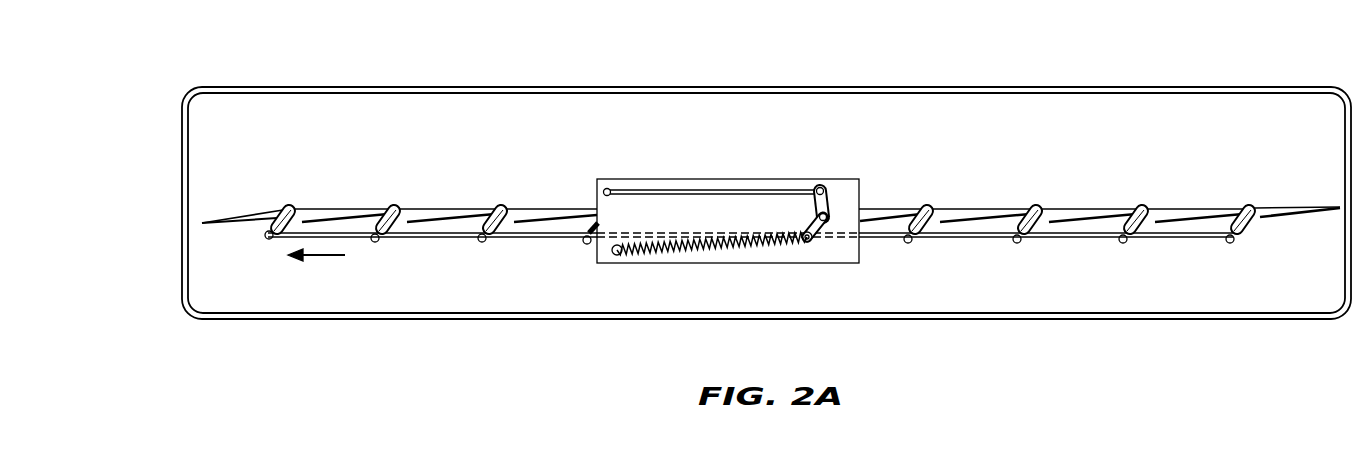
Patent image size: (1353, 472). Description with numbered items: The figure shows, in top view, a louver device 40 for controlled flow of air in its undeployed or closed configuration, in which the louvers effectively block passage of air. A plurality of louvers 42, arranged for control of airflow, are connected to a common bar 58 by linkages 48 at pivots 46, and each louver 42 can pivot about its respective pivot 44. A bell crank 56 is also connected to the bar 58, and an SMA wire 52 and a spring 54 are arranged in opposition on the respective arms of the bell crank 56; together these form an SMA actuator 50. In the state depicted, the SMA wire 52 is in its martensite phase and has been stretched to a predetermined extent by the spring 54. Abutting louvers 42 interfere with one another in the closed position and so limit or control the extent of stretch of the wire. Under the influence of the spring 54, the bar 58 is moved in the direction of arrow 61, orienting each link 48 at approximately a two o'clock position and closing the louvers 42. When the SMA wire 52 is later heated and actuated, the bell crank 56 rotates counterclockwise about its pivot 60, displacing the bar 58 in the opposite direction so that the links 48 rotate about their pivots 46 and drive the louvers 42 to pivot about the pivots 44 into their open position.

The fastening device 40 is at (164, 97).
The louver 42 is at (1182, 208).
The pivot 44 is at (935, 205).
The pivot 46 is at (910, 243).
The linkage 48 is at (405, 238).
The SMA actuator 50 is at (743, 177).
The SMA wire 52 is at (660, 189).
The spring 54 is at (748, 246).
The bell crank 56 is at (827, 186).
The bar 58 is at (355, 240).
The pivot 60 is at (829, 216).
The arrow 61 is at (333, 282).